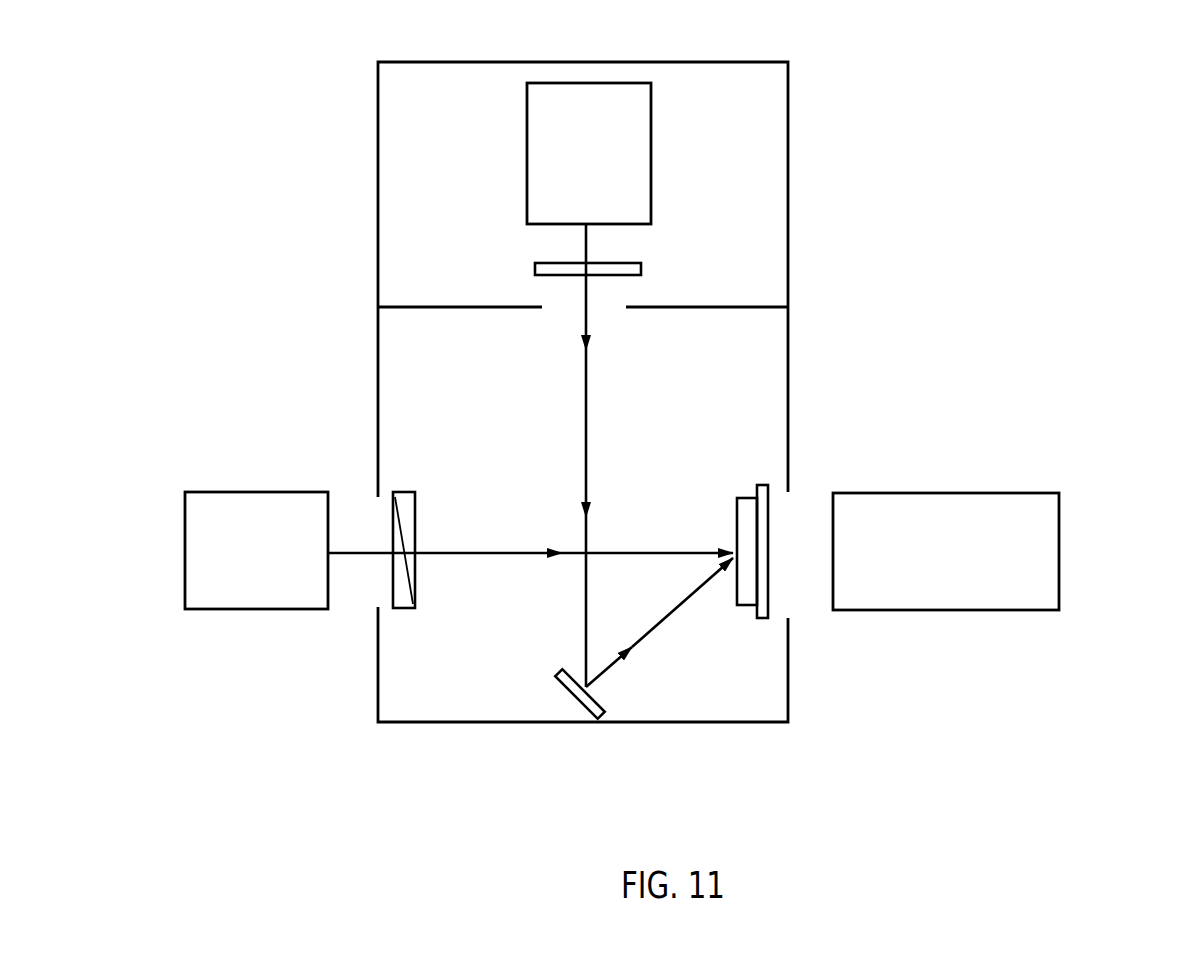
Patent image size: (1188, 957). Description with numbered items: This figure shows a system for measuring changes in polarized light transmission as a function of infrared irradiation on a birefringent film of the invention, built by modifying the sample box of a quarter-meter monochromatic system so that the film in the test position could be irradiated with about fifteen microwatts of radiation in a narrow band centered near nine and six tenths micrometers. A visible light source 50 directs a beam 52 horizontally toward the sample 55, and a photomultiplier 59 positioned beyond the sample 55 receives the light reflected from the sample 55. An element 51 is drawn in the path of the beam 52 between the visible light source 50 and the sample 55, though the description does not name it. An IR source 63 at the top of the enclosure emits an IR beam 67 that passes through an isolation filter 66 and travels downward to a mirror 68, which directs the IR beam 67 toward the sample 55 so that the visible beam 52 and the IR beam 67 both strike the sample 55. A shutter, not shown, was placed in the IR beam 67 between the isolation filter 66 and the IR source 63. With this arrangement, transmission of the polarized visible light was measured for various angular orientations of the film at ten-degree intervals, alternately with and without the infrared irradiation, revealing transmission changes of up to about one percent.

The visible light source 50 is at (185, 585).
The polarizer 51 is at (398, 492).
The beam 52 is at (522, 553).
The sample 55 is at (743, 606).
The photomultiplier 59 is at (1059, 545).
The IR source 63 is at (652, 195).
The isolation filter 66 is at (658, 269).
The IR beam 67 is at (640, 640).
The mirror 68 is at (572, 706).